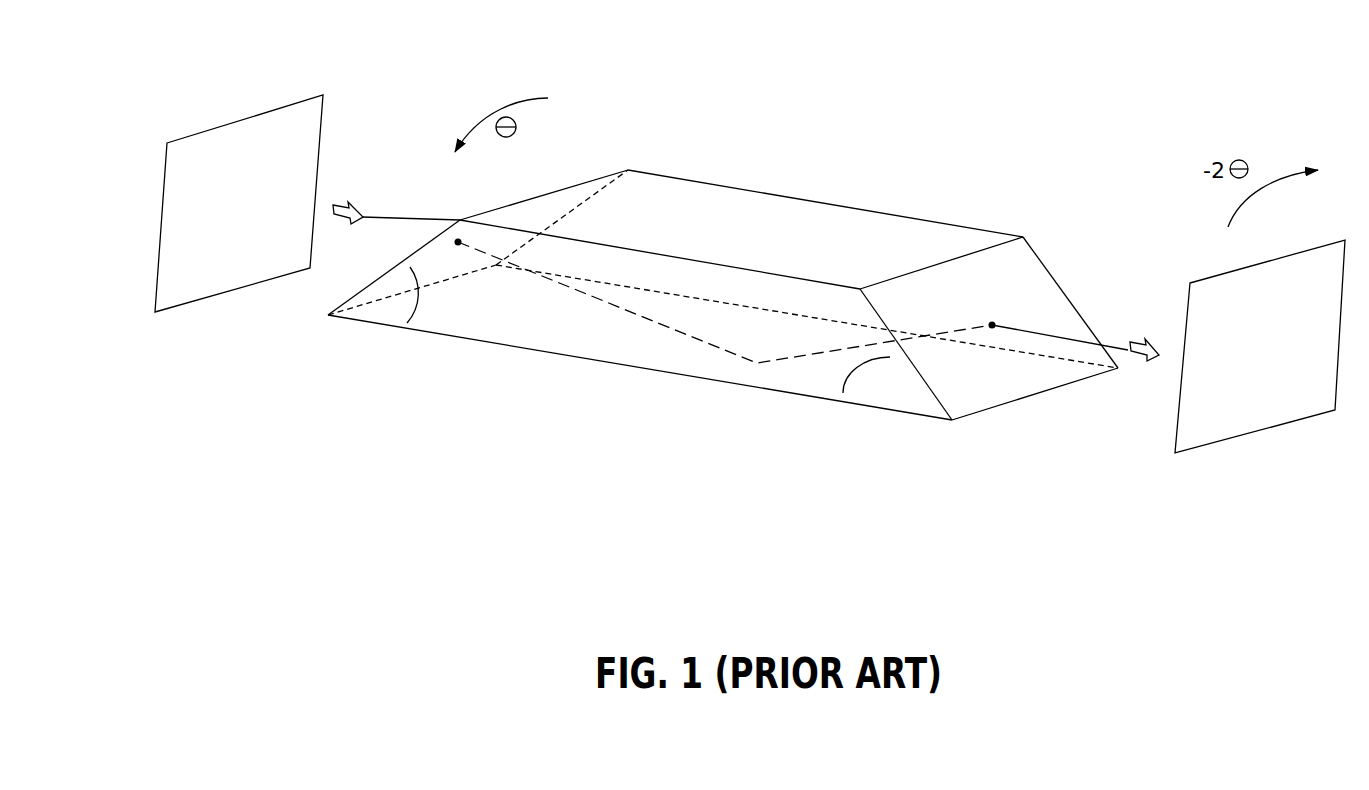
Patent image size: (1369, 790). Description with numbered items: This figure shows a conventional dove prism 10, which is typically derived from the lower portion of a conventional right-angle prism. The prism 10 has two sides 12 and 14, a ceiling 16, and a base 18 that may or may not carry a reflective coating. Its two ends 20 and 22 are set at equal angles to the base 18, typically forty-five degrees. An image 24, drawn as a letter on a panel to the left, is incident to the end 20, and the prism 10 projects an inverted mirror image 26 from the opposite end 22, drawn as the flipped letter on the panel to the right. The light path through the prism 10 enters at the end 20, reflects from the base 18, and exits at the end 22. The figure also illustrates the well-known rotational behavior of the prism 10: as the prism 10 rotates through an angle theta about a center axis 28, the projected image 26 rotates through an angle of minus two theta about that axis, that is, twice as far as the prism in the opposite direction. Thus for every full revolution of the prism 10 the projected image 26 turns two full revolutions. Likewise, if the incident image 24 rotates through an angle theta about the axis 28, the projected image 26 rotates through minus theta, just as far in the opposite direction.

The dove prism 10 is at (755, 313).
The side 12 is at (507, 320).
The side 14 is at (916, 190).
The ceiling 16 is at (645, 193).
The base 18 is at (685, 377).
The end 20 is at (360, 293).
The end 22 is at (1063, 290).
The image 24 is at (155, 273).
The projected image 26 is at (1180, 397).
The center axis 28 is at (1120, 343).